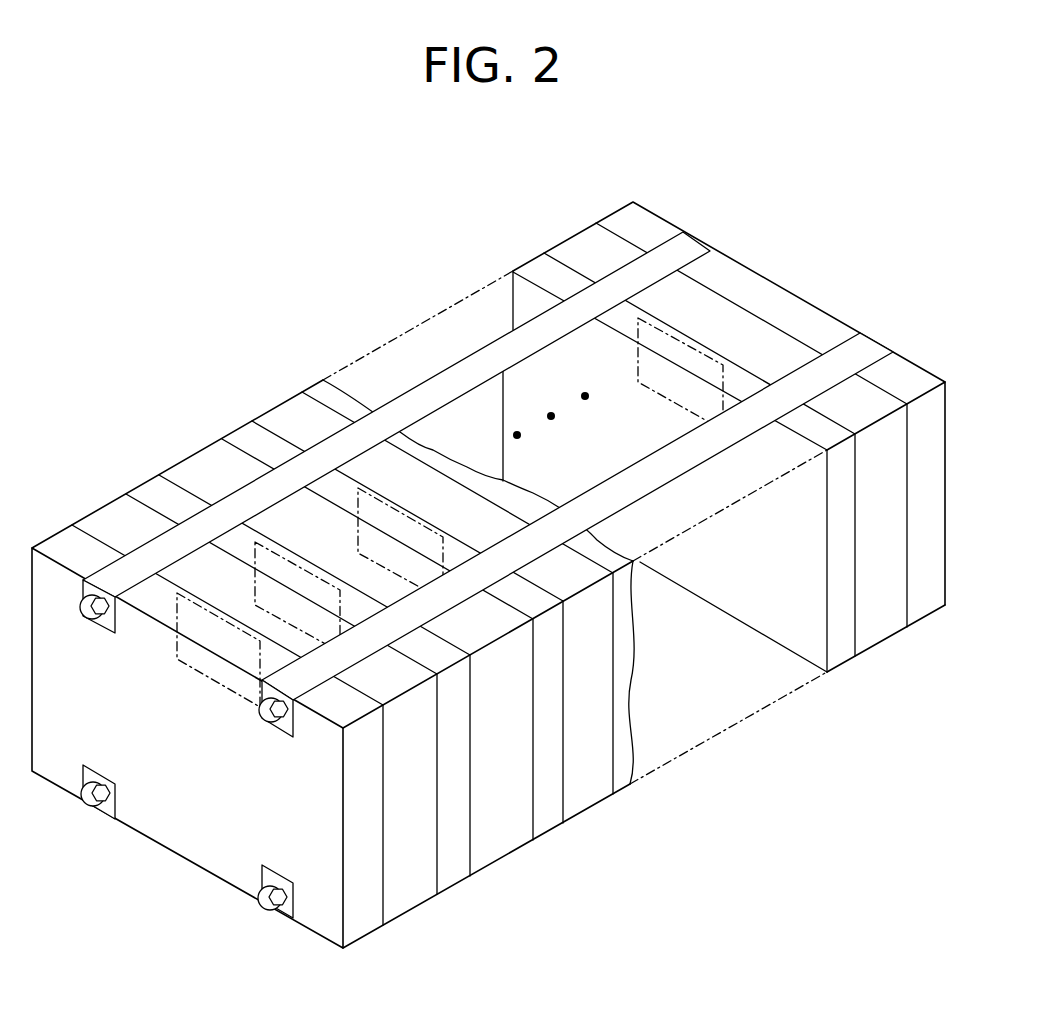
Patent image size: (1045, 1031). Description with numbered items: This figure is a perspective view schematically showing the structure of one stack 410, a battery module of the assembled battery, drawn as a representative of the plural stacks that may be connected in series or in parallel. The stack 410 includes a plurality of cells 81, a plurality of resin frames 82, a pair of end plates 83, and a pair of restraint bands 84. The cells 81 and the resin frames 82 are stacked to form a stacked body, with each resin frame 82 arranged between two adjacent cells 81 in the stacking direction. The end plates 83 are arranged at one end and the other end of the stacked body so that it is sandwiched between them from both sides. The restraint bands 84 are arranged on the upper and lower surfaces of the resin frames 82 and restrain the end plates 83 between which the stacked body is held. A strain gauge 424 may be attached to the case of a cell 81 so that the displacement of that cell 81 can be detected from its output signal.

The stack 410 is at (240, 307).
The cell 81 is at (405, 898).
The resin frame 82 is at (445, 870).
The end plate 83 is at (365, 908).
The restraint band 84 is at (443, 387).
The strain gauge 424 is at (682, 333).